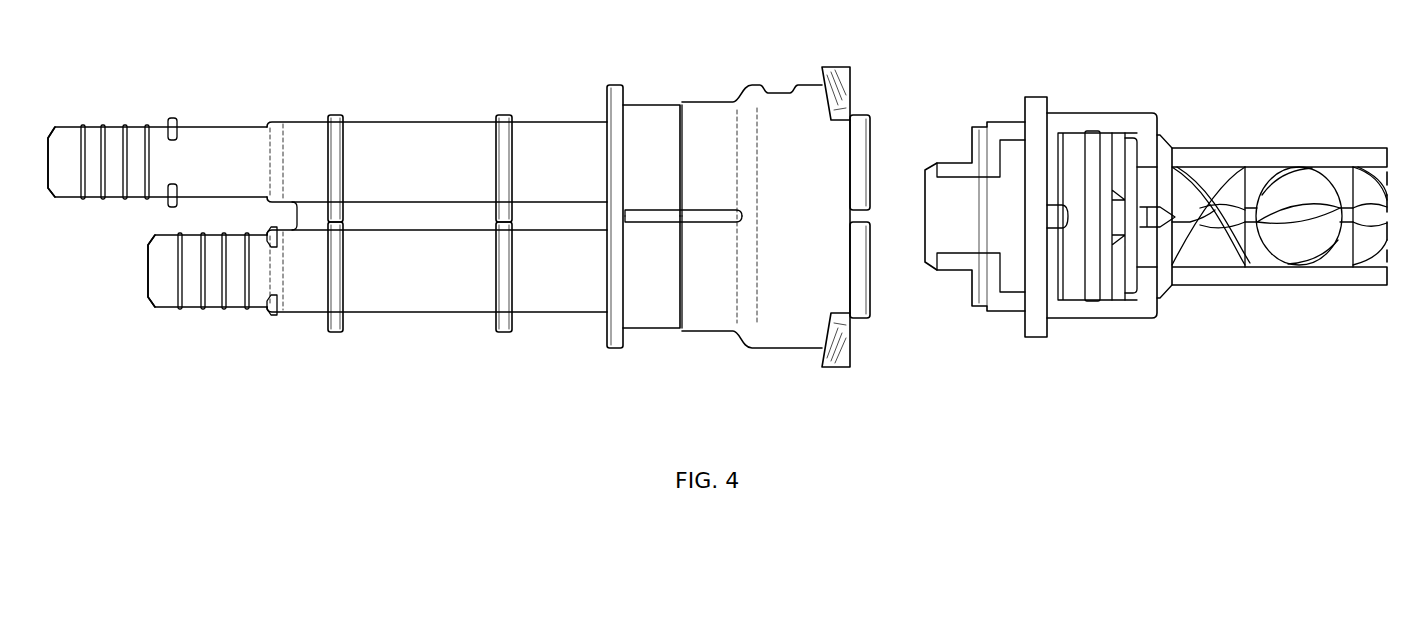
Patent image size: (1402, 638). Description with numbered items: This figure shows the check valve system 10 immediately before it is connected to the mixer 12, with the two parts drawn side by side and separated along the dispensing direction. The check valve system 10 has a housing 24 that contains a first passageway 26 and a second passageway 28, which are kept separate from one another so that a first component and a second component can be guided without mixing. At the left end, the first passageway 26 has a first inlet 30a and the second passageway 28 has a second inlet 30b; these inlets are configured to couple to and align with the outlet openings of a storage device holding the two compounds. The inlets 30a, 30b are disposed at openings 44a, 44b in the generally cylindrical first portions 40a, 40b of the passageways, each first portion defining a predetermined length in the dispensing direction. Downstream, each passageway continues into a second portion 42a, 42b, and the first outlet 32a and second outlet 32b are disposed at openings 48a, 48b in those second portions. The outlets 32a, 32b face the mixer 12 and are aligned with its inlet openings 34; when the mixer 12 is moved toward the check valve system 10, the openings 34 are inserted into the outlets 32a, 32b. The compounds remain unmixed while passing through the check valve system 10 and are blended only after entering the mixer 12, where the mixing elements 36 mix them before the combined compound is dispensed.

The check valve system 10 is at (730, 44).
The mixer 12 is at (1103, 113).
The housing 24 is at (615, 84).
The first passageway 26 is at (378, 121).
The second passageway 28 is at (440, 313).
The first inlet 30a is at (50, 149).
The second inlet 30b is at (147, 290).
The first outlet 32a is at (870, 135).
The second outlet 32b is at (870, 310).
The inlet openings 34 is at (973, 122).
The mixing elements 36 is at (1283, 192).
The first portion 40a is at (467, 121).
The first portion 40b is at (388, 313).
The second portion 42a is at (655, 105).
The second portion 42b is at (653, 328).
The opening 44a is at (48, 172).
The opening 44b is at (147, 257).
The opening 48a is at (870, 185).
The opening 48b is at (870, 282).